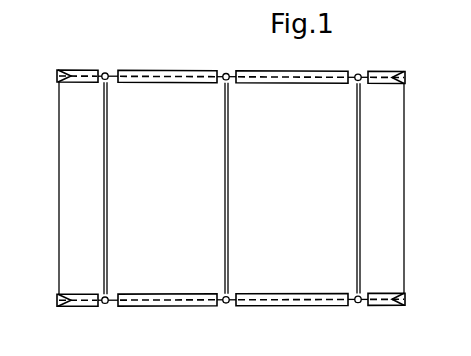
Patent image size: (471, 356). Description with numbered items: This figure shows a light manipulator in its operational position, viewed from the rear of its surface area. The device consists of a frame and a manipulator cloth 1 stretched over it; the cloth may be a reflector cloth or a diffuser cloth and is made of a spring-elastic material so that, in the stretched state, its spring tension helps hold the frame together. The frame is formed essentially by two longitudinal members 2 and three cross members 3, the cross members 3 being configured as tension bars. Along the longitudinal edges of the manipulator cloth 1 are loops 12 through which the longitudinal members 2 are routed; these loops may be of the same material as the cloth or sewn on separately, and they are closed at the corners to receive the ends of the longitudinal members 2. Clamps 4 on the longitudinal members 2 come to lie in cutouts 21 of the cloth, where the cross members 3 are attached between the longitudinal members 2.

The manipulator cloth 1 is at (300, 237).
The longitudinal members 2 is at (63, 70).
The cross members 3 is at (104, 190).
The clamps 4 is at (227, 72).
The loops 12 is at (166, 80).
The cutouts 21 is at (104, 70).